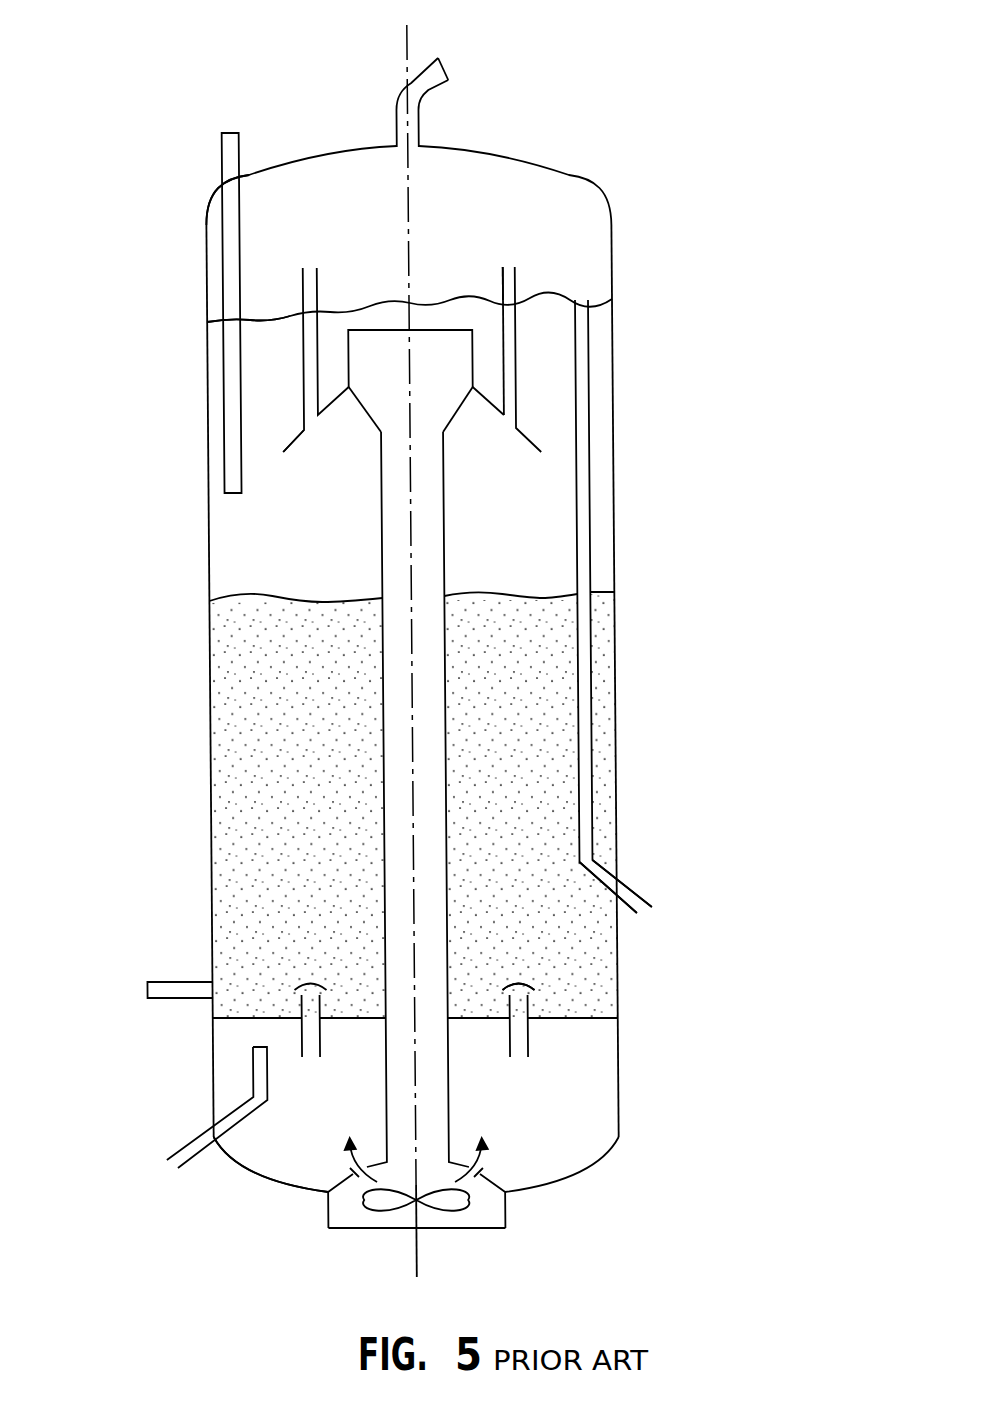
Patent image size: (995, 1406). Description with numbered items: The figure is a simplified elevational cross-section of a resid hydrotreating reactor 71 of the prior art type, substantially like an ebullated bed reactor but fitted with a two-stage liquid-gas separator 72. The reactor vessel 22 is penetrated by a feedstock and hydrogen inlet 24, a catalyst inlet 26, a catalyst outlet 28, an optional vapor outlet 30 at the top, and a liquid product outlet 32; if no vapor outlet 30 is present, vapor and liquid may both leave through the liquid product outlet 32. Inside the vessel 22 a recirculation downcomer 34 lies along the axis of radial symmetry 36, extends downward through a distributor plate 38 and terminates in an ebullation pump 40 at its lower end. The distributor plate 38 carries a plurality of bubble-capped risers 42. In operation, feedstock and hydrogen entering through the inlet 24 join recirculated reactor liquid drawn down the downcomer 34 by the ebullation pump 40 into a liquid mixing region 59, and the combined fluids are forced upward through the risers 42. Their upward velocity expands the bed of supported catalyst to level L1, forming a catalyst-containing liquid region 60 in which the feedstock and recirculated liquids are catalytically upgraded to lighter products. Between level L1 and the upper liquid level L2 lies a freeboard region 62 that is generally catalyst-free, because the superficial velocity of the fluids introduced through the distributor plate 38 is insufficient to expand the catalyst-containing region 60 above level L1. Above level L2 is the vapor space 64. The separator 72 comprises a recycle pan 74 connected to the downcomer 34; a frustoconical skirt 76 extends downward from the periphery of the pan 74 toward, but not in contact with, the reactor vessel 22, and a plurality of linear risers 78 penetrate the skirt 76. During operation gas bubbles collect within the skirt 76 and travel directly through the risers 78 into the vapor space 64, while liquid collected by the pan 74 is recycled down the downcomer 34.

The reactor vessel 22 is at (612, 770).
The feedstock and hydrogen inlet 24 is at (165, 1153).
The catalyst inlet 26 is at (232, 132).
The catalyst outlet 28 is at (163, 982).
The vapor outlet 30 is at (455, 62).
The liquid product outlet 32 is at (590, 367).
The recirculation downcomer 34 is at (442, 741).
The axis of radial symmetry 36 is at (408, 1260).
The distributor plate 38 is at (465, 1017).
The ebullation pump 40 is at (470, 1220).
The bubble-capped risers 42 is at (314, 1046).
The liquid mixing region 59 is at (313, 1144).
The catalyst-containing liquid region 60 is at (312, 674).
The freeboard region 62 is at (536, 549).
The vapor space 64 is at (332, 224).
The resid hydrotreating reactor 71 is at (641, 479).
The two-stage liquid-gas separator 72 is at (509, 266).
The recycle pan 74 is at (454, 414).
The frustoconical skirt 76 is at (286, 447).
The linear risers 78 is at (500, 283).
The catalyst bed level L1 is at (207, 600).
The upper liquid level L2 is at (207, 322).